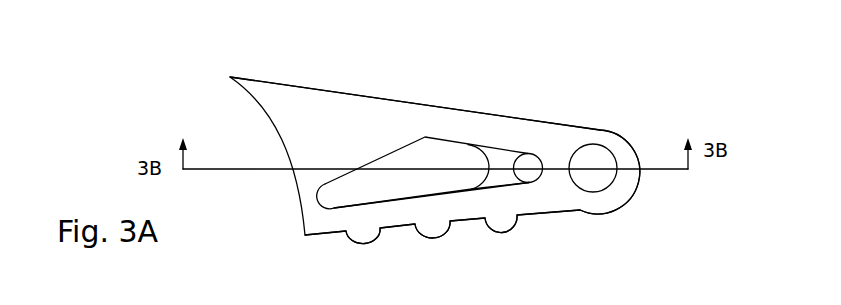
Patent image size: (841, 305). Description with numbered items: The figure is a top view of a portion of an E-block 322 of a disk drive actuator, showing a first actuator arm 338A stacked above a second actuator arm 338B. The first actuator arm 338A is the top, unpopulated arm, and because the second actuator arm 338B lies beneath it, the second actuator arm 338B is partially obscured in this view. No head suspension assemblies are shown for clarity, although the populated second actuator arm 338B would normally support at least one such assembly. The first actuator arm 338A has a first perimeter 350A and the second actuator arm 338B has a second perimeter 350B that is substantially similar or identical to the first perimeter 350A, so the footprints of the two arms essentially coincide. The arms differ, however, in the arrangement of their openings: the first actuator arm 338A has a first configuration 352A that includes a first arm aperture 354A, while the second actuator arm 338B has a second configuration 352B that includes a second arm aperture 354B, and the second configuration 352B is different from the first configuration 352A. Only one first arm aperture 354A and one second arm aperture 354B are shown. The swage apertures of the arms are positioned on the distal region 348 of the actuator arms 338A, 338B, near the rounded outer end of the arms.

The E-block 322 is at (347, 78).
The first perimeter 350A is at (447, 108).
The second perimeter 350B is at (540, 138).
The distal region 348 is at (627, 190).
The first actuator arm 338A is at (522, 158).
The second actuator arm 338B is at (505, 155).
The first arm aperture 354A is at (435, 162).
The second arm aperture 354B is at (347, 192).
The first configuration 352A is at (505, 178).
The second configuration 352B is at (395, 185).